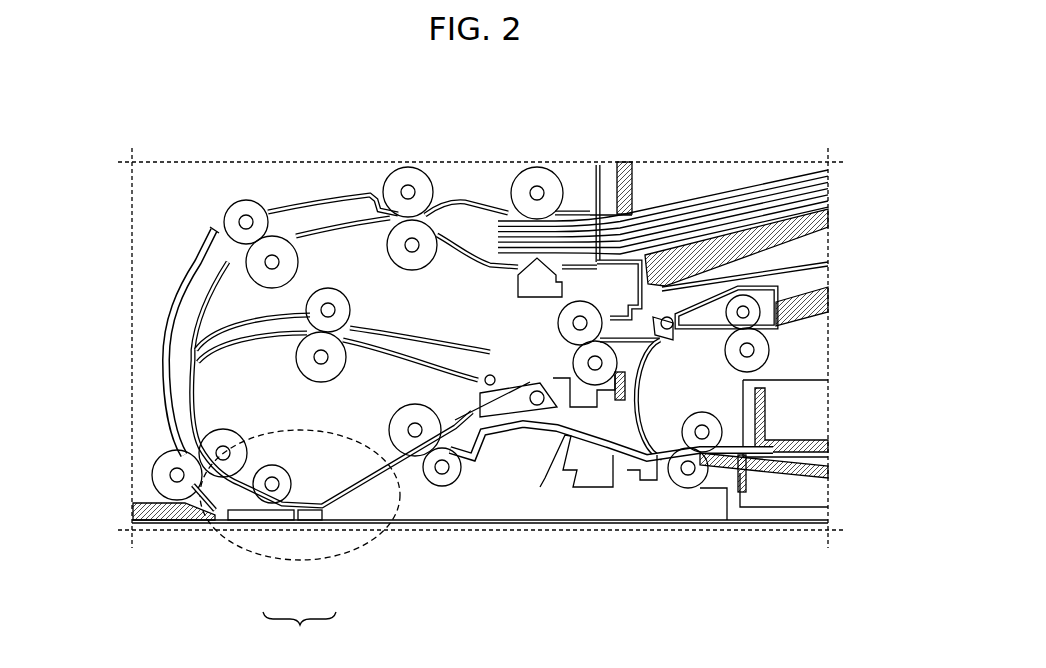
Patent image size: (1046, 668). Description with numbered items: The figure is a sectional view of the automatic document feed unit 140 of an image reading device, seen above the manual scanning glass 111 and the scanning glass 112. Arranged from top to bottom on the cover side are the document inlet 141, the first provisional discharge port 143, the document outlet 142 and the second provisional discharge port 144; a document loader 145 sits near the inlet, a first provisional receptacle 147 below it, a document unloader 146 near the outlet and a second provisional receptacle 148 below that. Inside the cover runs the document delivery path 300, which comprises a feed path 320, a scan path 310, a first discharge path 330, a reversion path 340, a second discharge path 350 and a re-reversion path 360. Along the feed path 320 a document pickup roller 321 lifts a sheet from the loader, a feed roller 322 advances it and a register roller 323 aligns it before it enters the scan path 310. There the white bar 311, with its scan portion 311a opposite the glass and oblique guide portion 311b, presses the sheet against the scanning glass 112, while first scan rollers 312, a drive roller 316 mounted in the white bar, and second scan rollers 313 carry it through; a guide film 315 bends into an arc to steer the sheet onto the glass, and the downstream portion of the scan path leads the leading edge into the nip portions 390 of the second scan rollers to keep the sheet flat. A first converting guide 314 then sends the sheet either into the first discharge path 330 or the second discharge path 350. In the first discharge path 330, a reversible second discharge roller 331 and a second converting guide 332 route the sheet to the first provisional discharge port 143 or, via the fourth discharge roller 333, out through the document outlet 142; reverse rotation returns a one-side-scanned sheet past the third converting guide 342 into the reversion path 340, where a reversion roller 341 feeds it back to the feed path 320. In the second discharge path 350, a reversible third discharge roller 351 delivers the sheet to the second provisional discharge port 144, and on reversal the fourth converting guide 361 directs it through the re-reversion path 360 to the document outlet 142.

The manual scanning glass 111 is at (496, 525).
The scanning glass 112 is at (245, 533).
The automatic document feed unit 140 is at (710, 180).
The document inlet 141 is at (637, 212).
The document outlet 142 is at (768, 333).
The first provisional discharge port 143 is at (632, 325).
The second provisional discharge port 144 is at (745, 492).
The document loader 145 is at (797, 210).
The document unloader 146 is at (805, 440).
The first provisional receptacle 147 is at (800, 282).
The second provisional receptacle 148 is at (788, 468).
The document delivery path 300 is at (200, 257).
The scan path 310 is at (378, 492).
The white bar 311 is at (299, 629).
The scan portion 311a is at (300, 522).
The guide portion 311b is at (270, 522).
The first scan rollers 312 is at (230, 430).
The second scan rollers 313 is at (395, 413).
The first converting guide 314 is at (490, 440).
The guide film 315 is at (203, 517).
The drive roller 316 is at (280, 465).
The feed path 320 is at (186, 348).
The document pickup roller 321 is at (537, 167).
The feed roller 322 is at (405, 167).
The register roller 323 is at (250, 200).
The first discharge path 330 is at (603, 218).
The second discharge roller 331 is at (558, 323).
The second converting guide 332 is at (733, 328).
The fourth discharge roller 333 is at (770, 352).
The reversion path 340 is at (376, 345).
The reversion roller 341 is at (296, 357).
The third converting guide 342 is at (490, 373).
The second discharge path 350 is at (664, 460).
The third discharge roller 351 is at (708, 414).
The re-reversion path 360 is at (645, 383).
The fourth converting guide 361 is at (622, 490).
The nip portions 390 is at (448, 520).